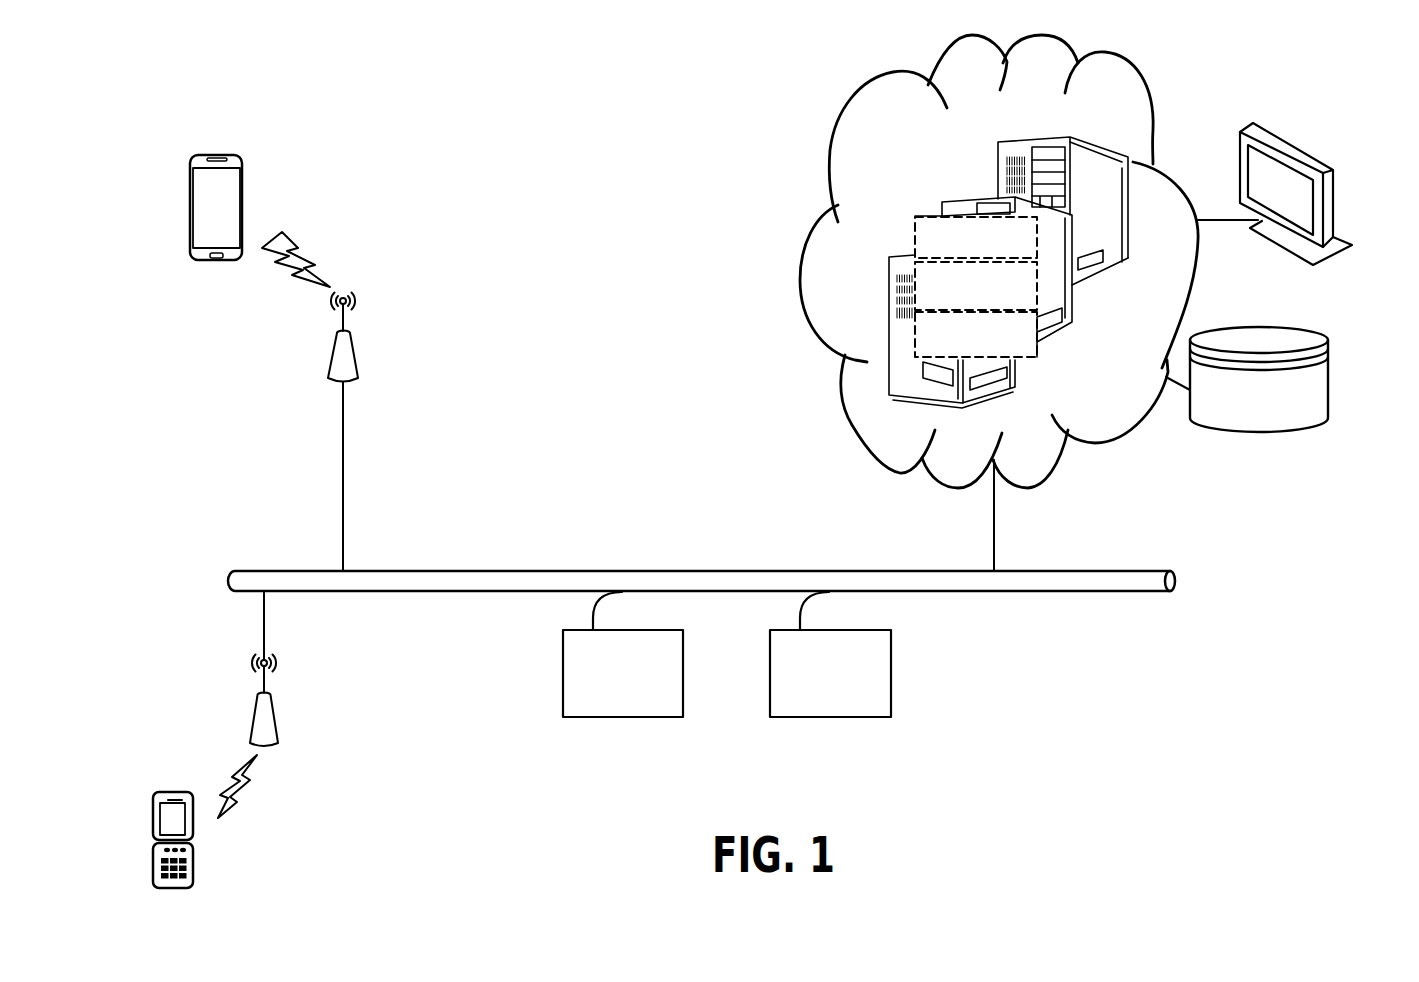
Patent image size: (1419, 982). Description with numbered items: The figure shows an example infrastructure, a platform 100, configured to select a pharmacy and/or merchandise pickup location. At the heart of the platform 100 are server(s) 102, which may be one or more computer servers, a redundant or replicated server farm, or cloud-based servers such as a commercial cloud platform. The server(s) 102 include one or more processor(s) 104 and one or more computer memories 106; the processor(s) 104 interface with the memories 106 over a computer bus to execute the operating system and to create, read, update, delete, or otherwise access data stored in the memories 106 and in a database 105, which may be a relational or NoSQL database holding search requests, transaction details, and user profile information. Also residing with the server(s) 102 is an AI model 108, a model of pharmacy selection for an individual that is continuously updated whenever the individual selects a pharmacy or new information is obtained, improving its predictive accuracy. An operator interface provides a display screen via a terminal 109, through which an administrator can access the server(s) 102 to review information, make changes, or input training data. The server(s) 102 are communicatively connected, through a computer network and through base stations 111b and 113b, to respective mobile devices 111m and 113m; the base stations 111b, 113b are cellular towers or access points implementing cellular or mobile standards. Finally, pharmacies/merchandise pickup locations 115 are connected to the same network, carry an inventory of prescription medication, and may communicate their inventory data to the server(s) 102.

The platform 100 is at (732, 55).
The server(s) 102 is at (1152, 107).
The processor(s) 104 is at (915, 238).
The database 105 is at (1308, 337).
The memories 106 is at (895, 288).
The AI model 108 is at (915, 337).
The terminal 109 is at (1290, 138).
The mobile device 111m is at (242, 190).
The base station 111b is at (357, 350).
The mobile device 113m is at (194, 863).
The base station 113b is at (255, 715).
The pharmacies/merchandise pickup locations 115 is at (683, 667).